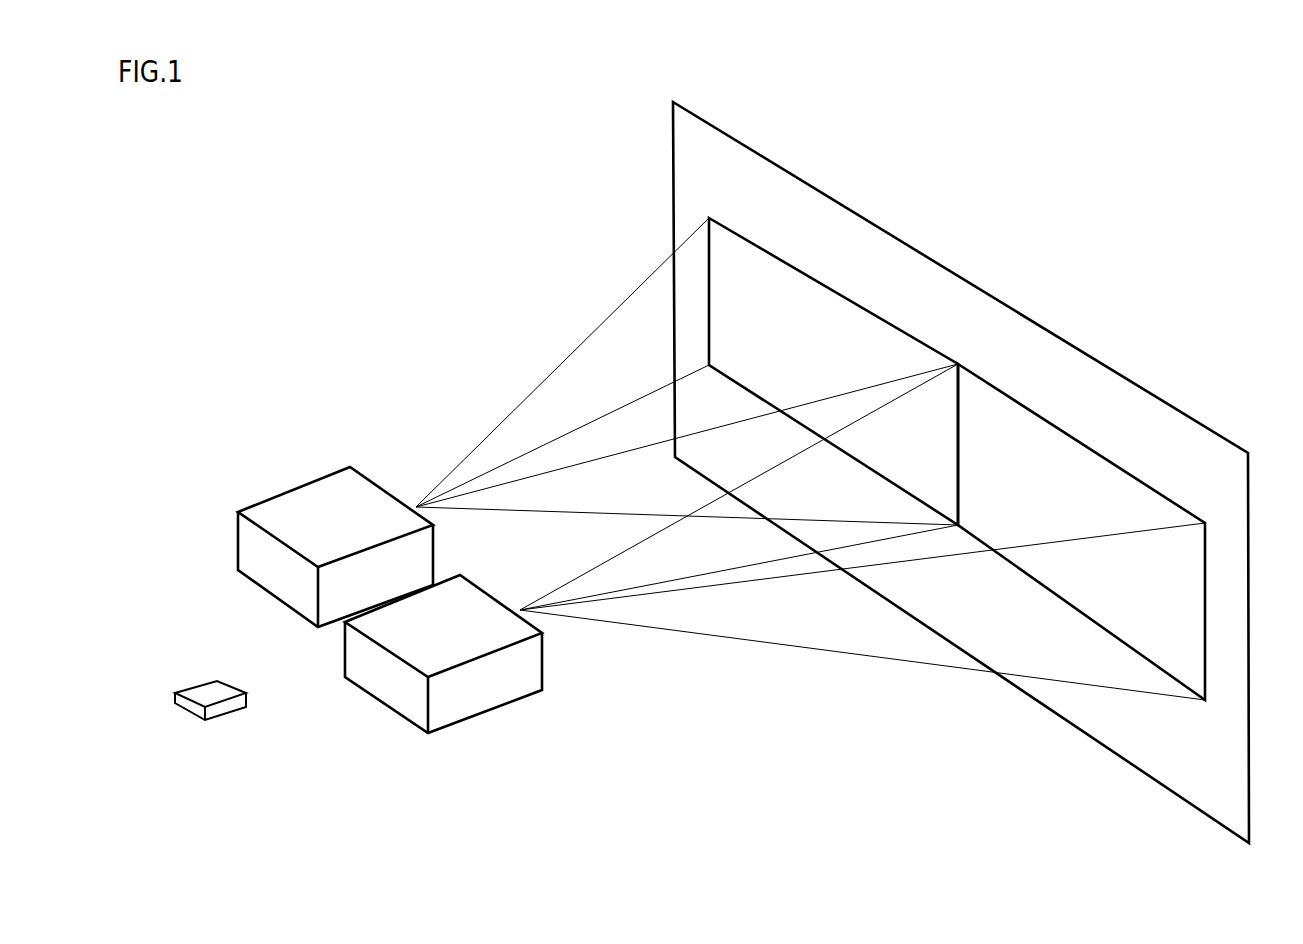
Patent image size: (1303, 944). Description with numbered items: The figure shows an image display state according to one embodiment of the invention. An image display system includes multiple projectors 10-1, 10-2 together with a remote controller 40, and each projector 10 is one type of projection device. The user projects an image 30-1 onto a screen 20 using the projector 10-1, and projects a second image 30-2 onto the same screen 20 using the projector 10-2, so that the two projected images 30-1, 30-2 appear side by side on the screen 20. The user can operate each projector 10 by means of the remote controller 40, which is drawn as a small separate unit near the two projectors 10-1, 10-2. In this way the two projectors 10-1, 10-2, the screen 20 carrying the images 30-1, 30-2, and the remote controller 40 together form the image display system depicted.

The projector 10 is at (410, 579).
The projector 10-1 is at (320, 493).
The projector 10-2 is at (490, 595).
The screen 20 is at (1020, 325).
The image 30-1 is at (842, 315).
The image 30-2 is at (1093, 480).
The remote controller 40 is at (202, 682).